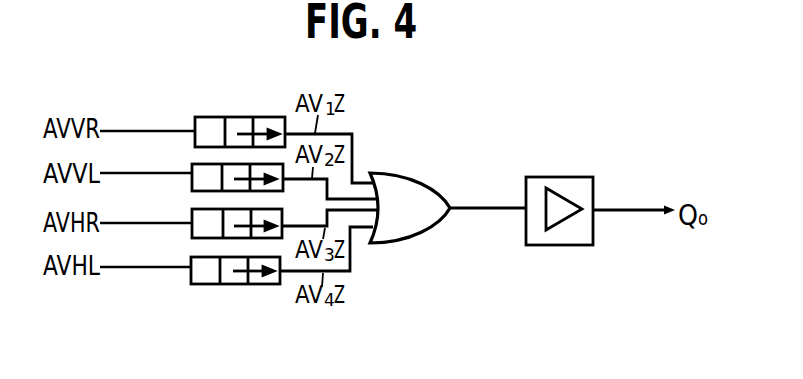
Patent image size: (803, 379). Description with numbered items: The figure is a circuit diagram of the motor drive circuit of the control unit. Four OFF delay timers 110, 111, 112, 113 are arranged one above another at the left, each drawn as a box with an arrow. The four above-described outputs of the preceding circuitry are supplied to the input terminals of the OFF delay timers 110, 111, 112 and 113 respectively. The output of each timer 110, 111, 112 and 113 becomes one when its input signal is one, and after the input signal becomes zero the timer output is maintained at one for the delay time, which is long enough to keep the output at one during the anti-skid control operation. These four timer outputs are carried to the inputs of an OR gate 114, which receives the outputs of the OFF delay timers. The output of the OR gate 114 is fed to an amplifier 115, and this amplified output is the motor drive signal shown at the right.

The OFF delay timer 110 is at (197, 117).
The OFF delay timer 111 is at (196, 164).
The OFF delay timer 112 is at (196, 209).
The OFF delay timer 113 is at (199, 257).
The OR gate 114 is at (394, 173).
The amplifier 115 is at (553, 177).